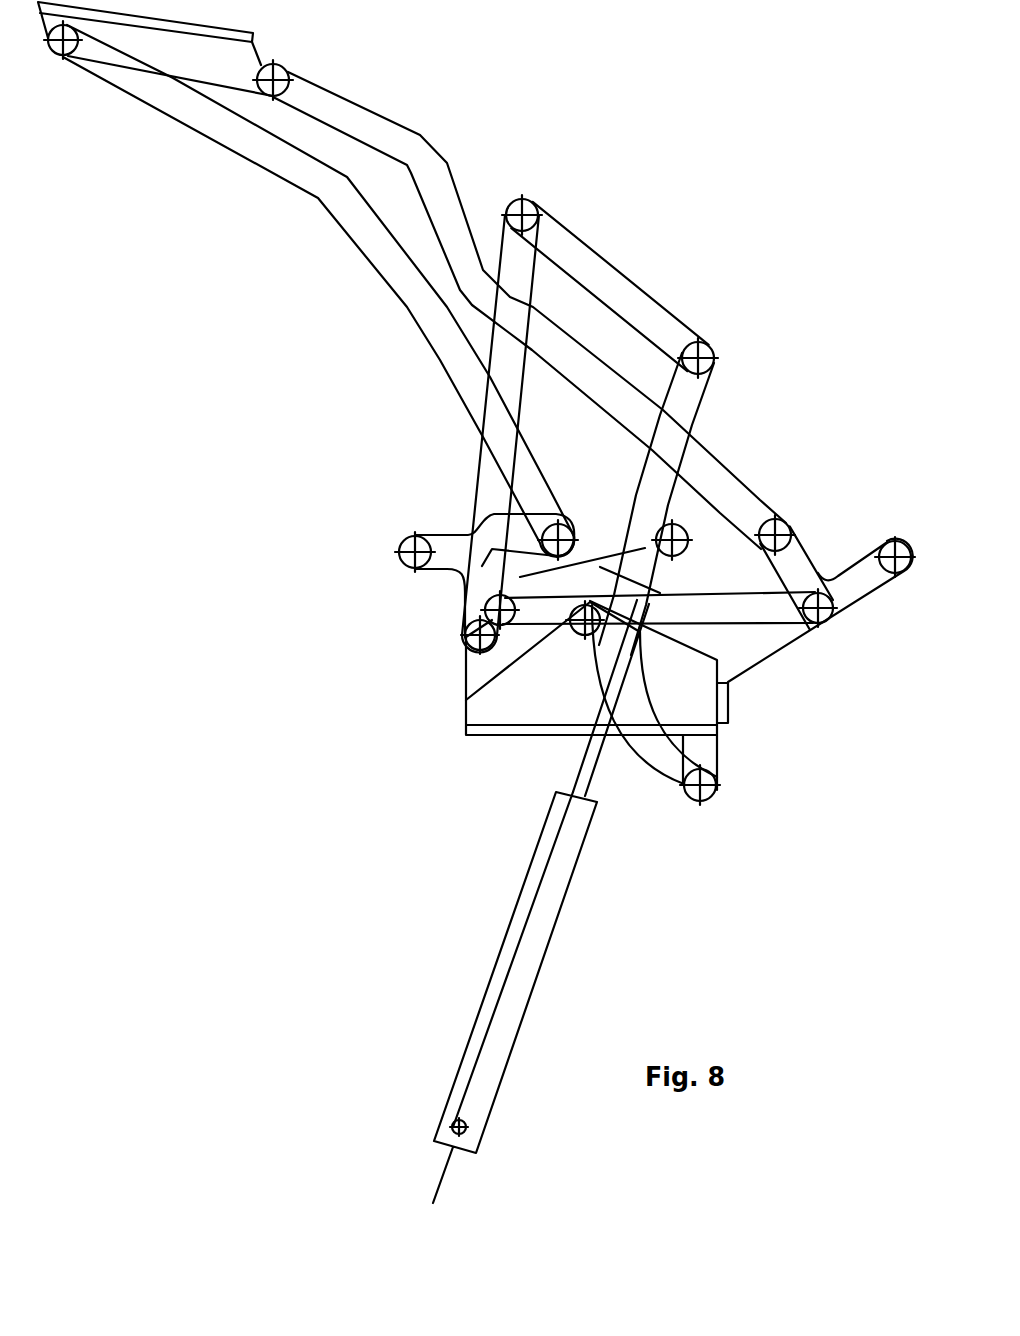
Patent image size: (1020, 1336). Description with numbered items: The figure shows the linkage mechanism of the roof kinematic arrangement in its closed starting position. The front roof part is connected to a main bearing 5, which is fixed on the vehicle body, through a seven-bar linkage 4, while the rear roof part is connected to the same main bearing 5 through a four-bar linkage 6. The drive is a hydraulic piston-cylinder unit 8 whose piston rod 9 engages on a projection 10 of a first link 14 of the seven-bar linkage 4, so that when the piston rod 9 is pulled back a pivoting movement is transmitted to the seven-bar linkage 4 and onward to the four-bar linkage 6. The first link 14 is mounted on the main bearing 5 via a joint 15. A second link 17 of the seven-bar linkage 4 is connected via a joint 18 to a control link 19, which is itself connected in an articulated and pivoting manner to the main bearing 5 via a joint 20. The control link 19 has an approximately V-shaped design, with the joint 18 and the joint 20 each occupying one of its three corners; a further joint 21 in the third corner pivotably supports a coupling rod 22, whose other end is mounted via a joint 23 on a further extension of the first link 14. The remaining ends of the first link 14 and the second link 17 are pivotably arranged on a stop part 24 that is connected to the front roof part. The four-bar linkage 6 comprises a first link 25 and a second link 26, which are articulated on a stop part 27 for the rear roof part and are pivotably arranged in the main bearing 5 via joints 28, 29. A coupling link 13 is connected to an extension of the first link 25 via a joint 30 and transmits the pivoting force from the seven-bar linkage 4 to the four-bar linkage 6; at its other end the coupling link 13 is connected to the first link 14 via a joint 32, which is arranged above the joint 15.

The seven-bar linkage 4 is at (282, 277).
The main bearing 5 is at (489, 718).
The four-bar linkage 6 is at (738, 313).
The hydraulic piston-cylinder unit 8 is at (548, 907).
The piston rod 9 is at (598, 770).
The projection 10 is at (635, 570).
The coupling link 13 is at (457, 532).
The first link 14 is at (319, 200).
The joint 15 is at (630, 694).
The second link 17 is at (601, 413).
The joint 18 is at (777, 518).
The control link 19 is at (838, 601).
The joint 20 is at (893, 540).
The joint 21 is at (818, 625).
The coupling rod 22 is at (711, 625).
The joint 23 is at (483, 609).
The stop part 24 is at (176, 66).
The first link 25 is at (491, 371).
The second link 26 is at (638, 511).
The stop part 27 is at (605, 285).
The joint 28 is at (462, 648).
The joint 29 is at (707, 803).
The joint 30 is at (407, 557).
The joint 32 is at (559, 535).